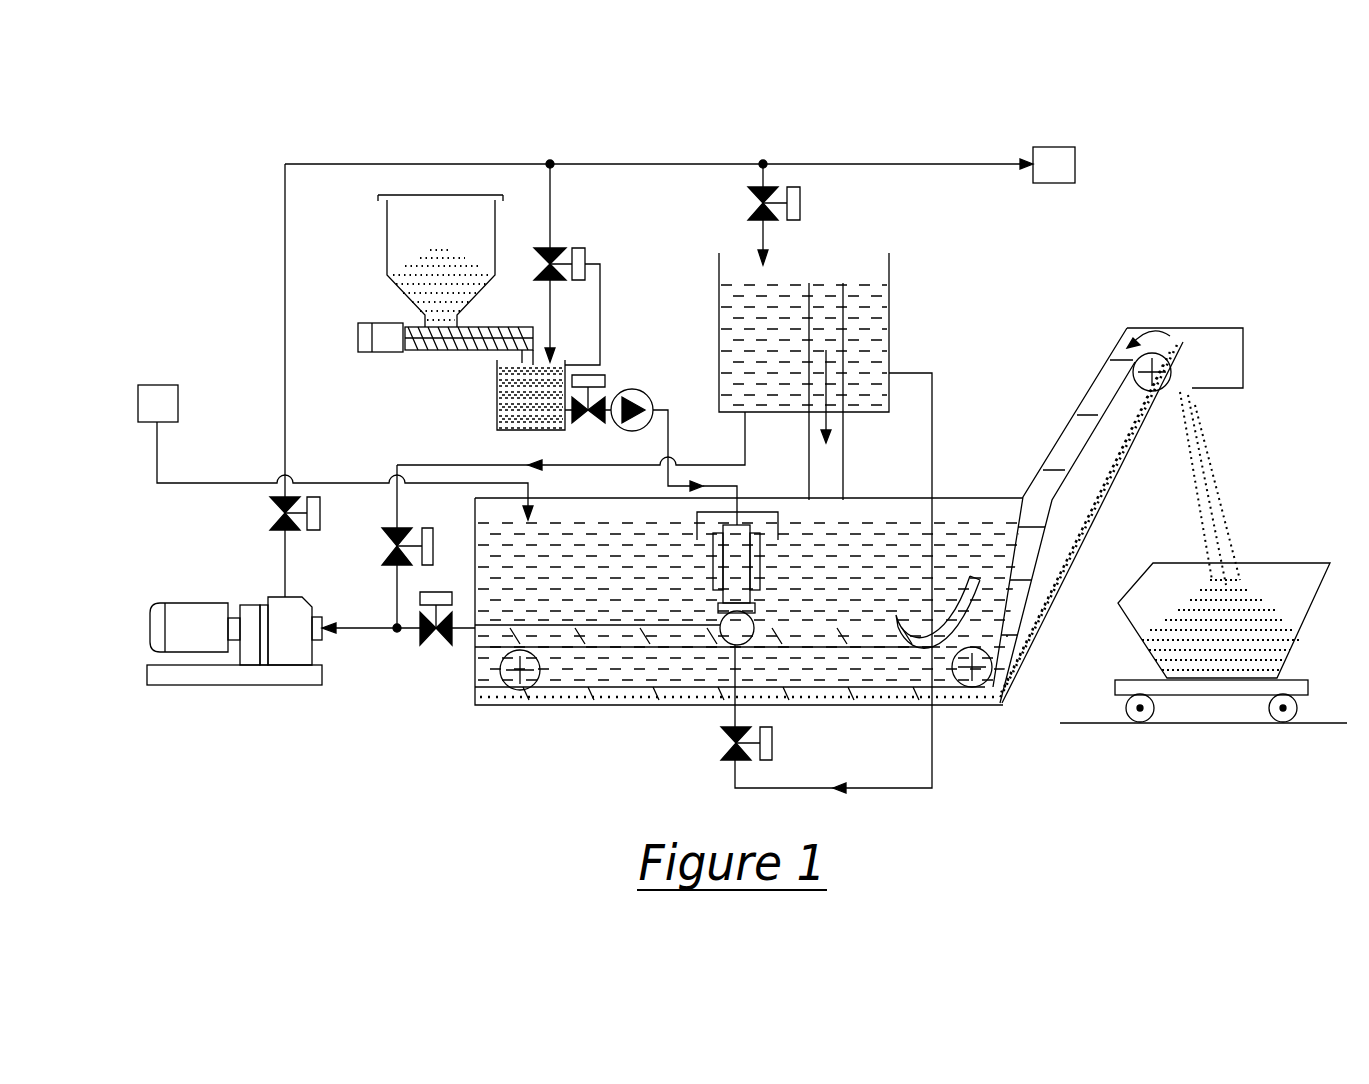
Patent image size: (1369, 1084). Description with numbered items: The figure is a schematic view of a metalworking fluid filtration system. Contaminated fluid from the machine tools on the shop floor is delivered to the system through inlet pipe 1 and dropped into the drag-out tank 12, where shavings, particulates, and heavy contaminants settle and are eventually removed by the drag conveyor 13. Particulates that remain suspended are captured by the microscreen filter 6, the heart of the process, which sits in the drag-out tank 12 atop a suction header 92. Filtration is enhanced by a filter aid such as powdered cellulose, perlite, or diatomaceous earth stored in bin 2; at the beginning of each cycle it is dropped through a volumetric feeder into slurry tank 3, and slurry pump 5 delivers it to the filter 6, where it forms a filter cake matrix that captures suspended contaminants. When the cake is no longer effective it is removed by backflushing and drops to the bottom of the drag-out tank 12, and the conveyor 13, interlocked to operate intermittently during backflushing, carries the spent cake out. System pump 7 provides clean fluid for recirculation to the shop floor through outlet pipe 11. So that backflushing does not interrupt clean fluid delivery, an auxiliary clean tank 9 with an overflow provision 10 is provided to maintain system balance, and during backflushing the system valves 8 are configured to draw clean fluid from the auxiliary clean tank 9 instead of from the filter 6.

The inlet pipe 1 is at (158, 403).
The bin 2 is at (392, 224).
The slurry tank 3 is at (497, 414).
The slurry pump 5 is at (642, 397).
The filter 6 is at (758, 545).
The system pump 7 is at (300, 643).
The system valves 8 is at (279, 512).
The auxiliary clean tank 9 is at (889, 287).
The overflow provision 10 is at (812, 302).
The outlet pipe 11 is at (1054, 165).
The drag-out tank 12 is at (478, 527).
The drag conveyor 13 is at (1095, 388).
The suction header 92 is at (735, 632).